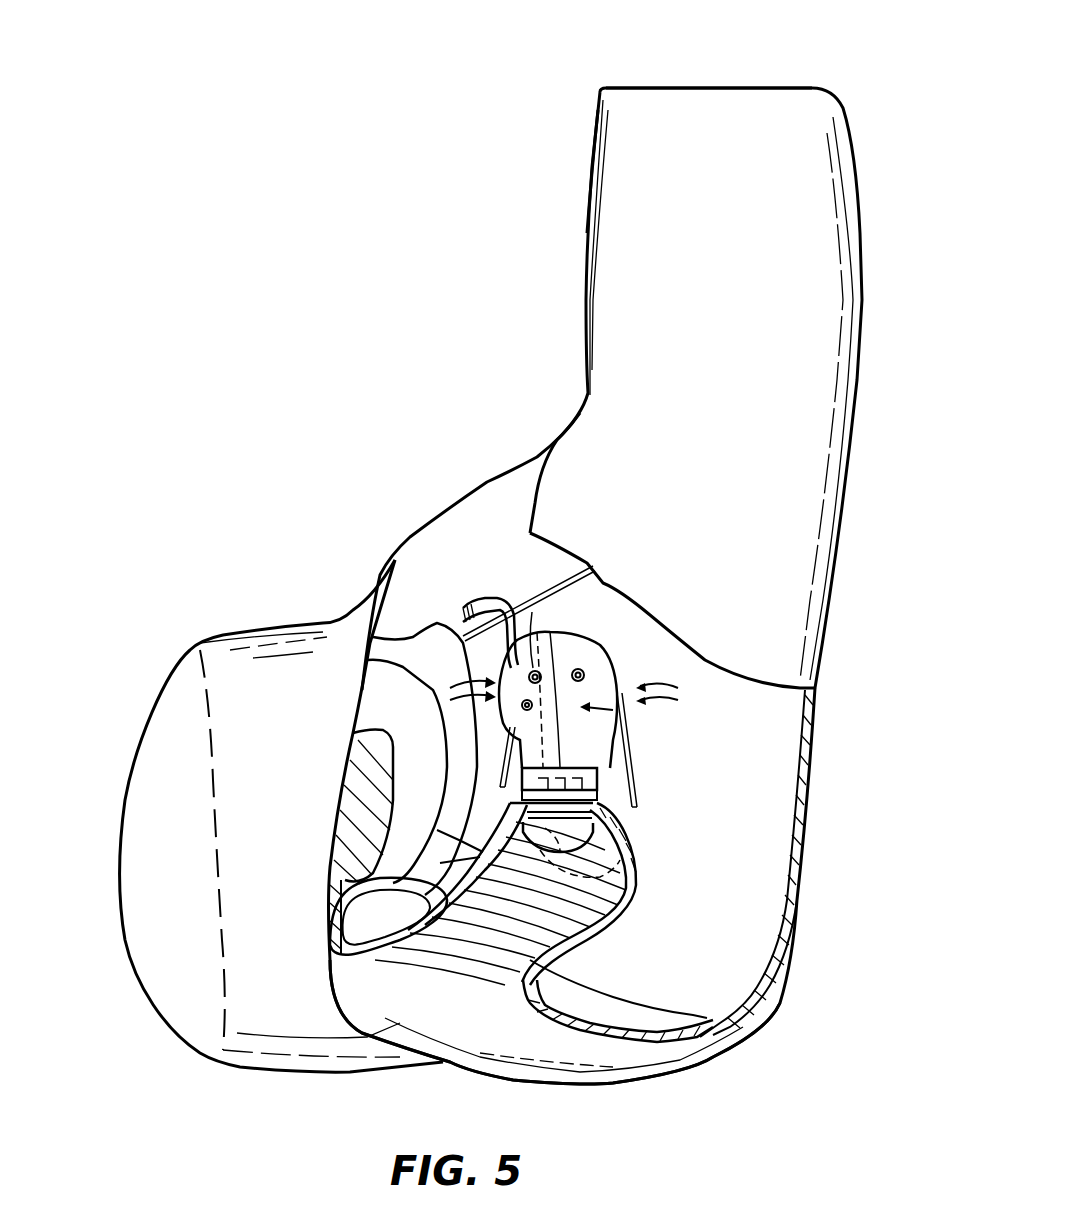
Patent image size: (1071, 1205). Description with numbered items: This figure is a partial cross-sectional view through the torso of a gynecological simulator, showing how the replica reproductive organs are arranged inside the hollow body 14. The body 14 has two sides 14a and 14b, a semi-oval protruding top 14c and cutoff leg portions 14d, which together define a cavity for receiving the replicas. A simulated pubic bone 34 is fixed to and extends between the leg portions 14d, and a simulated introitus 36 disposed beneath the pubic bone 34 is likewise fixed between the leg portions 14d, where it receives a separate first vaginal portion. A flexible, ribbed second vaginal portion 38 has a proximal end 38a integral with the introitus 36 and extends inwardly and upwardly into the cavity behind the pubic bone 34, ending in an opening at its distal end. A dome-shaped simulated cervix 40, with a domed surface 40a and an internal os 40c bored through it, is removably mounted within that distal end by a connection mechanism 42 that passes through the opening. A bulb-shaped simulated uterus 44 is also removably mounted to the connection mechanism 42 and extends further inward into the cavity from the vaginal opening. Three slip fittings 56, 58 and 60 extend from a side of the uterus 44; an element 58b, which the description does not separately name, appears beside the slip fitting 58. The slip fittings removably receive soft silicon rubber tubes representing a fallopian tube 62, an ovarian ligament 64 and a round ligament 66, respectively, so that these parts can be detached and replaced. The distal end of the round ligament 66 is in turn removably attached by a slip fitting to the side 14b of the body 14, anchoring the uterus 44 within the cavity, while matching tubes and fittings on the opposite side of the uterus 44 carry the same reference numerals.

The hollow body 14 is at (856, 158).
The side 14a is at (465, 530).
The side 14b is at (586, 200).
The semi-oval protruding top 14c is at (707, 88).
The cutoff leg portions 14d is at (170, 755).
The simulated pubic bone 34 is at (357, 780).
The simulated introitus 36 is at (545, 1048).
The second vaginal portion 38 is at (610, 920).
The proximal end 38a is at (520, 978).
The simulated cervix 40 is at (603, 842).
The domed surface 40a is at (505, 833).
The internal os 40c is at (620, 880).
The connection mechanism 42 is at (598, 792).
The simulated uterus 44 is at (572, 633).
The slip fitting 56 is at (546, 633).
The slip fitting 58 is at (588, 673).
The fastener plate 58b is at (615, 812).
The slip fitting 60 is at (467, 717).
The fallopian tube 62 is at (467, 777).
The ovarian ligament 64 is at (633, 743).
The round ligament 66 is at (497, 603).